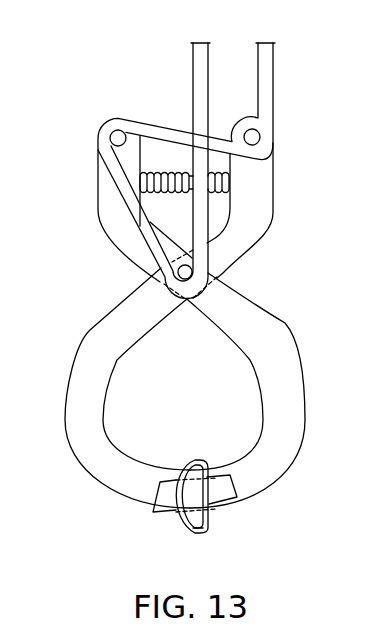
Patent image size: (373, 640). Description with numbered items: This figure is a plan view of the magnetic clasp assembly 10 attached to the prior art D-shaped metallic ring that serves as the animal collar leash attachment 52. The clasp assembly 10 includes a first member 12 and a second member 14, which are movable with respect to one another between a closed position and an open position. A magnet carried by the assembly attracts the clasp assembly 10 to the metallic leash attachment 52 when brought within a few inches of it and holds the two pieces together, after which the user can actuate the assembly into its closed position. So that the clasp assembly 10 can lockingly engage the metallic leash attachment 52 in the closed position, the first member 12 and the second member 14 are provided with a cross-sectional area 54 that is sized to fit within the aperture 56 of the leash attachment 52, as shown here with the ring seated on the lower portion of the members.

The magnetic clasp assembly 10 is at (187, 295).
The first member 12 is at (255, 315).
The second member 14 is at (128, 315).
The animal collar leash attachment 52 is at (196, 462).
The cross-sectional area 54 is at (215, 500).
The aperture 56 is at (196, 527).